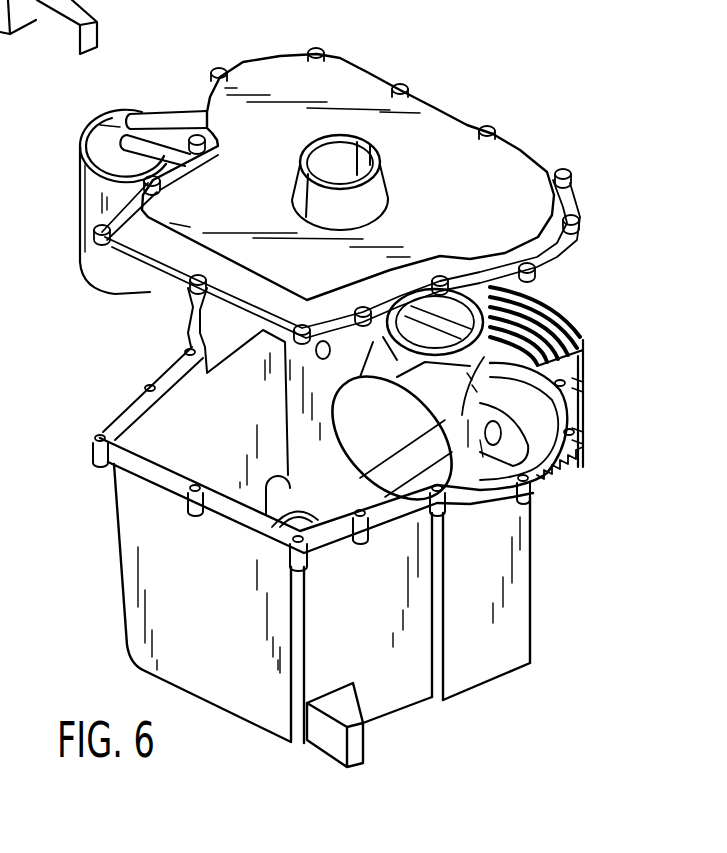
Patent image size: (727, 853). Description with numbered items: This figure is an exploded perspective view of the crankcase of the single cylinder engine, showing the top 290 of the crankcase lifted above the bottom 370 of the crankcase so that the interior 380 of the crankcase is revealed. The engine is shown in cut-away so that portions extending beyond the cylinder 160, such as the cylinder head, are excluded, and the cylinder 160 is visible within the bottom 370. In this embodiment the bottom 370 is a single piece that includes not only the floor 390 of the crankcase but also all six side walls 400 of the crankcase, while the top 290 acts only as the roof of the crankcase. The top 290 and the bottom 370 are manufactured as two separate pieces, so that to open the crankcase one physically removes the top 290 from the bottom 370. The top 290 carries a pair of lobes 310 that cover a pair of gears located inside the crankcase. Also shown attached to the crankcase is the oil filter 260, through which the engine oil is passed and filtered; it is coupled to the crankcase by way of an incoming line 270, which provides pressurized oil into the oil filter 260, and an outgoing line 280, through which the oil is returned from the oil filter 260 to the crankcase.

The cylinder 160 is at (560, 303).
The oil filter 260 is at (101, 274).
The incoming line 270 is at (172, 118).
The outgoing line 280 is at (92, 172).
The top of the crankcase 290 is at (510, 157).
The lobes 310 is at (347, 64).
The bottom of the crankcase 370 is at (531, 650).
The interior of the crankcase 380 is at (185, 398).
The floor of the crankcase 390 is at (143, 669).
The side walls of the crankcase 400 is at (118, 553).